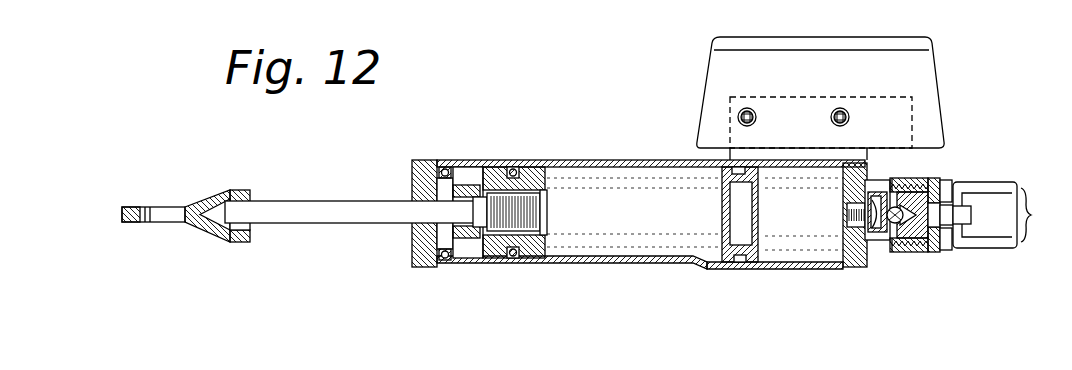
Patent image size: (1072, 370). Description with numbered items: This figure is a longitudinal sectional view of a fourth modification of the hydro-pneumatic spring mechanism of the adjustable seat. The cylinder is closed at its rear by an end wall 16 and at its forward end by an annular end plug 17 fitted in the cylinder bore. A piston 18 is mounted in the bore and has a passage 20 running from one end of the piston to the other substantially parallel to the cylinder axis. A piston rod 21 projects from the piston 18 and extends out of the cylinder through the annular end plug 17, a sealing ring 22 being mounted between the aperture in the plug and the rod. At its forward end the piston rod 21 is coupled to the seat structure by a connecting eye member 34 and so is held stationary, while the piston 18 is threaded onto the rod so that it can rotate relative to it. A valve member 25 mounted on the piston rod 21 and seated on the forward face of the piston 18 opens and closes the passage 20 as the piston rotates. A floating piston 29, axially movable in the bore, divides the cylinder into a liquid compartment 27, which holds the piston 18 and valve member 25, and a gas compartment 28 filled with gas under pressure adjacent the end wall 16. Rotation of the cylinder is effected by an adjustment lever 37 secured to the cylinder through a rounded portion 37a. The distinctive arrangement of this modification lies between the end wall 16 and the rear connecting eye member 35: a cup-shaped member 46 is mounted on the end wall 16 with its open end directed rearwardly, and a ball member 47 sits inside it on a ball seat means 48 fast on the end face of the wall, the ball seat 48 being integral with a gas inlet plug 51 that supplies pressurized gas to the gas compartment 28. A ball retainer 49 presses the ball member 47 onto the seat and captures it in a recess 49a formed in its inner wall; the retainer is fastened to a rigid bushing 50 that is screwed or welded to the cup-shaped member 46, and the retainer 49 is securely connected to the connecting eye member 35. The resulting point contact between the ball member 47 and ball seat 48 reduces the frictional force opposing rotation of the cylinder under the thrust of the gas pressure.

The end wall 16 is at (853, 264).
The annular end plug 17 is at (412, 243).
The piston 18 is at (504, 166).
The passage 20 is at (538, 184).
The piston rod 21 is at (337, 196).
The sealing ring 22 is at (457, 263).
The valve member 25 is at (477, 174).
The liquid compartment 27 is at (620, 250).
The gas compartment 28 is at (793, 269).
The floating piston 29 is at (722, 225).
The connecting eye member 34 is at (182, 211).
The connecting eye member 35 is at (1042, 215).
The adjustment lever 37 is at (805, 25).
The rounded portion 37a is at (913, 92).
The cup-shaped member 46 is at (912, 176).
The ball member 47 is at (907, 240).
The ball seat means 48 is at (880, 242).
The ball retainer 49 is at (943, 252).
The recess 49a is at (893, 190).
The rigid bushing 50 is at (947, 183).
The gas inlet plug 51 is at (848, 213).